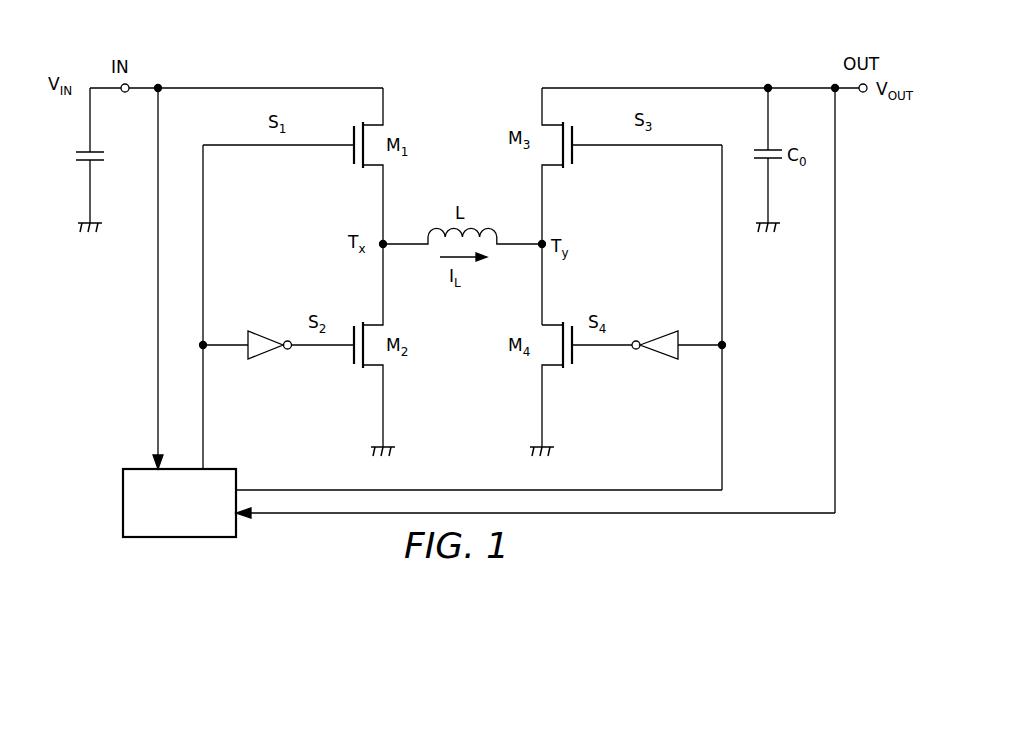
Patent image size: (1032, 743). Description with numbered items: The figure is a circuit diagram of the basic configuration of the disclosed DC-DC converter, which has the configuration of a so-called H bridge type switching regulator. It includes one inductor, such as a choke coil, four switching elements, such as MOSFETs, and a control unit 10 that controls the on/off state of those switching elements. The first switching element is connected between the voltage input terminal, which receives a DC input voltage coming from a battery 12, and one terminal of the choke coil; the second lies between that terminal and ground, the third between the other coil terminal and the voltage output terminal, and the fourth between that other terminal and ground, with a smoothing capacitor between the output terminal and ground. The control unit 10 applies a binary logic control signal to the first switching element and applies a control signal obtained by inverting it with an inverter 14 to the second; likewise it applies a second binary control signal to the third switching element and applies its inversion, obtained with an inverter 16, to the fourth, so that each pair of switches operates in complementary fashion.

The control unit 10 is at (180, 538).
The battery 12 is at (77, 154).
The inverter 14 is at (260, 354).
The inverter 16 is at (661, 354).